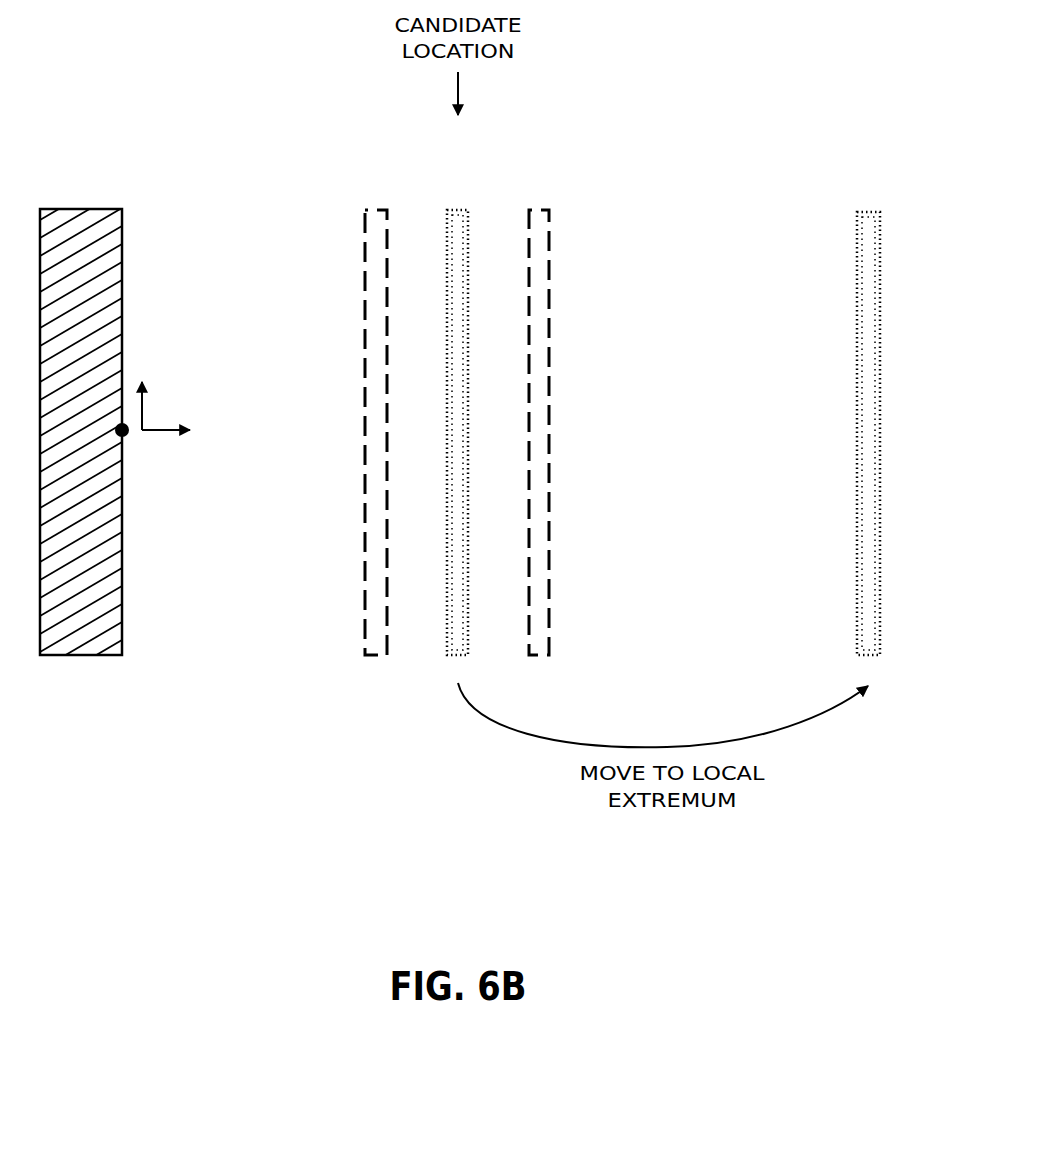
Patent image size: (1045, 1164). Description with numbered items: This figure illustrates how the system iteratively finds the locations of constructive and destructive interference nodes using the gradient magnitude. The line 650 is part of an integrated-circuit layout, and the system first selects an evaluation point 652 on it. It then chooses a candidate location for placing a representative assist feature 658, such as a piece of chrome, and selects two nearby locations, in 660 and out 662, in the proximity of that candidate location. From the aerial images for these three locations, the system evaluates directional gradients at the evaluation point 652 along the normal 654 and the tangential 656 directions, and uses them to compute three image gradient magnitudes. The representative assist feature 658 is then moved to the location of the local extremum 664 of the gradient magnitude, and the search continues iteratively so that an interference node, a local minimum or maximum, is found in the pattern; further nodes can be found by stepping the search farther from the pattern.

The line 650 is at (81, 419).
The evaluation point 652 is at (139, 462).
The normal direction 654 is at (193, 436).
The tangential direction 656 is at (143, 382).
The representative assist feature 658 is at (457, 398).
The in location 660 is at (375, 398).
The out location 662 is at (540, 398).
The local extremum 664 is at (868, 192).